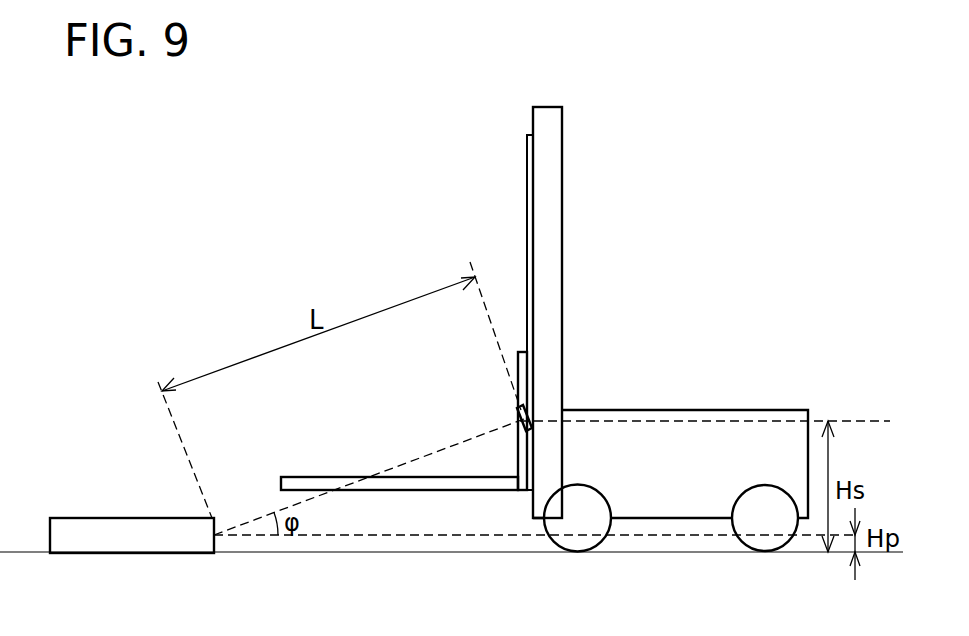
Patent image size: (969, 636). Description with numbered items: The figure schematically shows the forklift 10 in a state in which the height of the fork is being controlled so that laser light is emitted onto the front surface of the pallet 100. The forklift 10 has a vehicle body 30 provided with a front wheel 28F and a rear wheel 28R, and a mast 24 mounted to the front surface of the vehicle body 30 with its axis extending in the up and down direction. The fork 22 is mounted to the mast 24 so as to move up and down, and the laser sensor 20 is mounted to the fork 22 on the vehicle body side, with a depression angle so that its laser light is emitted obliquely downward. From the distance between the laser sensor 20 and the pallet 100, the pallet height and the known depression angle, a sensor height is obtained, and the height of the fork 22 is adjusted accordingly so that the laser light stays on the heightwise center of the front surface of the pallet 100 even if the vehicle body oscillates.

The forklift 10 is at (674, 343).
The laser sensor 20 is at (538, 413).
The fork 22 is at (400, 485).
The mast 24 is at (547, 203).
The front wheel 28F is at (578, 522).
The rear wheel 28R is at (765, 522).
The vehicle body 30 is at (753, 409).
The pallet 100 is at (133, 530).